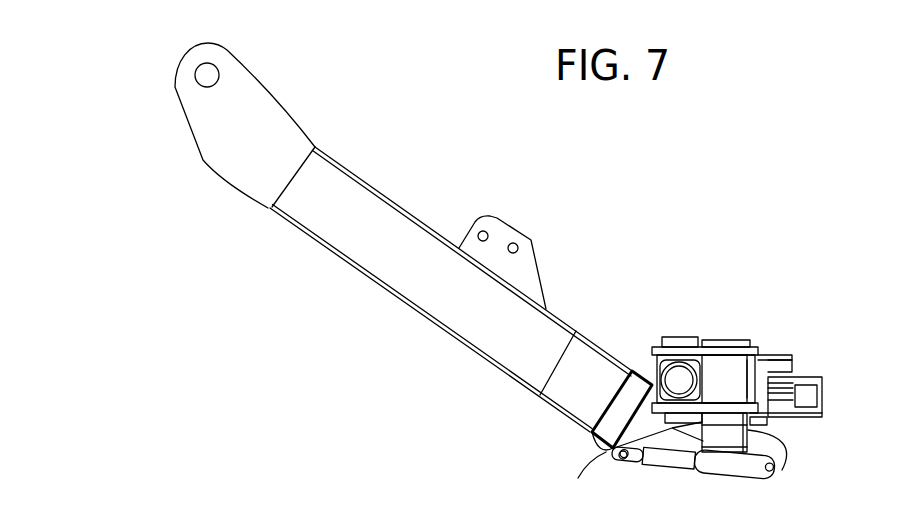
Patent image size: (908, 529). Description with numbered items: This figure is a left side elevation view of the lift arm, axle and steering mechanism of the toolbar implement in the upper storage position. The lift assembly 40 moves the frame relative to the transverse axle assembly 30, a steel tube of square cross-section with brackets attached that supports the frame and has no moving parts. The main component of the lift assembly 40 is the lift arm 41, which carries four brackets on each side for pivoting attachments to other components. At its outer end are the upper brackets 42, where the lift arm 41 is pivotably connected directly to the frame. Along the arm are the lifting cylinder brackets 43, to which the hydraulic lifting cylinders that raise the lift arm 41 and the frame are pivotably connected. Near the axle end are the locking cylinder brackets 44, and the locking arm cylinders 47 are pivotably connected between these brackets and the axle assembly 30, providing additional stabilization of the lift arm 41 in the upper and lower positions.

The transverse axle assembly 30 is at (750, 322).
The lift assembly 40 is at (338, 320).
The lift arm 41 is at (253, 130).
The upper brackets 42 is at (220, 73).
The lifting cylinder brackets 43 is at (537, 257).
The locking cylinder brackets 44 is at (617, 453).
The locking arm cylinders 47 is at (730, 477).